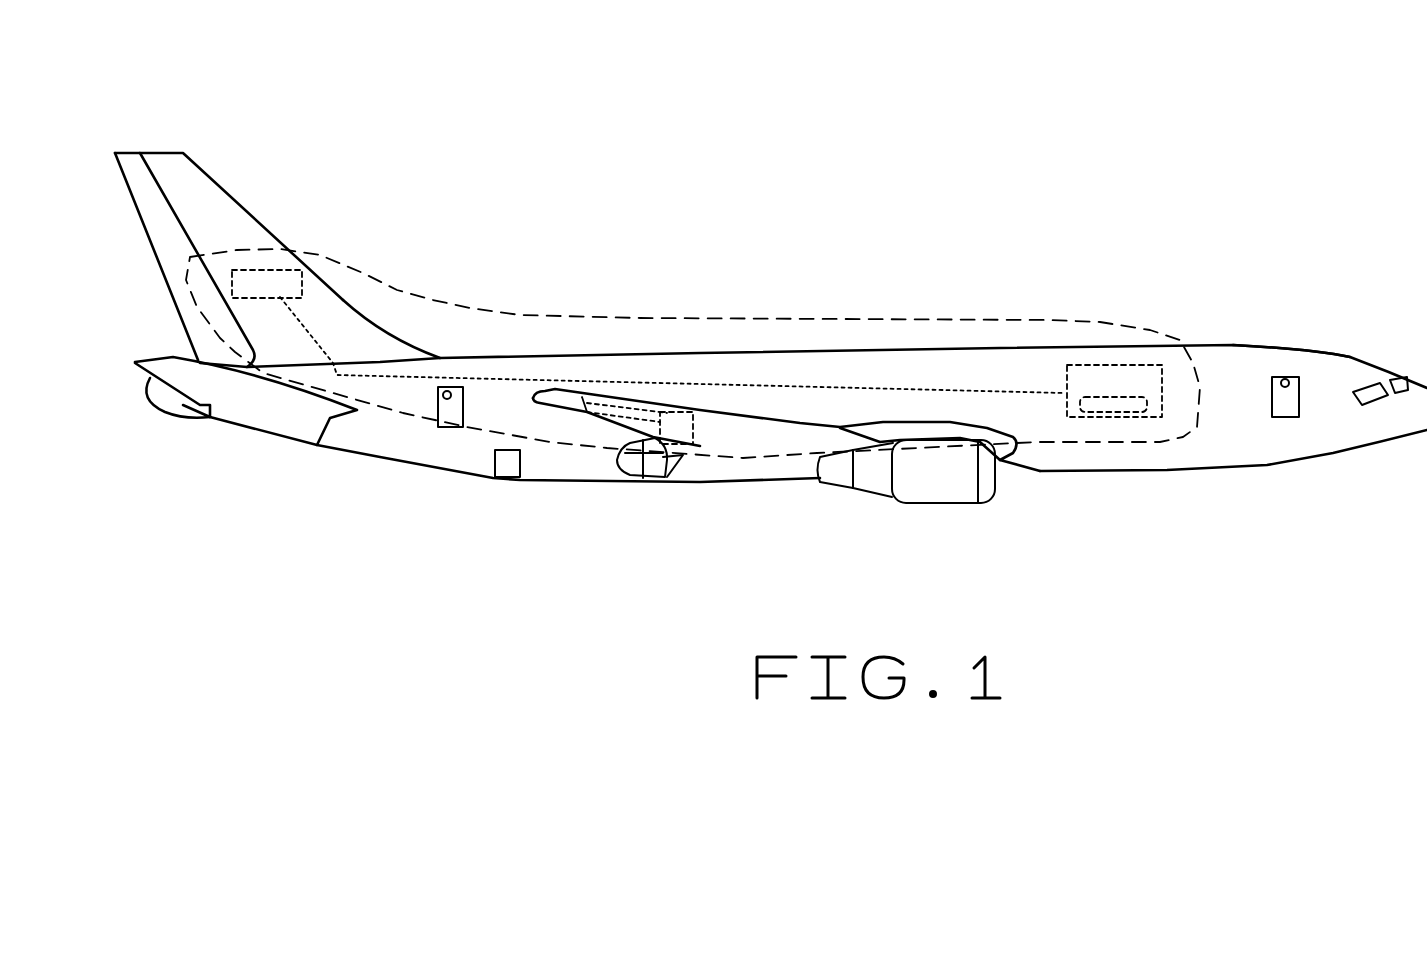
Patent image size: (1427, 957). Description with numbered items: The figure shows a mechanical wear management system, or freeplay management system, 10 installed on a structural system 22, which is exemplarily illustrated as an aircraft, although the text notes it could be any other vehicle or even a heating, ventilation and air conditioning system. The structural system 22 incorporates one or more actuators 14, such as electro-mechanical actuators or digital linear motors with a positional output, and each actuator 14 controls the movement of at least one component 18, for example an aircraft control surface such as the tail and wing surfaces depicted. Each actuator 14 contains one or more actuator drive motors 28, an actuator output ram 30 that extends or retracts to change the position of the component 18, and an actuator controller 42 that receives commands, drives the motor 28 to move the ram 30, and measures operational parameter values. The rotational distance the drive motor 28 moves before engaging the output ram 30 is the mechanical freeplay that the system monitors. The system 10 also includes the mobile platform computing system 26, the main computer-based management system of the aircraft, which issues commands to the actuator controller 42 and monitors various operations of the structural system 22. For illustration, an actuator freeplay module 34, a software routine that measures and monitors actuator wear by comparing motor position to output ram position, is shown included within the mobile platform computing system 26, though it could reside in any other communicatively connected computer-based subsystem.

The mechanical wear management system 10 is at (812, 310).
The actuator 14 is at (270, 275).
The component 18 is at (160, 243).
The structural system 22 is at (1268, 345).
The mobile platform computing system 26 is at (1112, 367).
The actuator drive motor 28 is at (253, 277).
The actuator output ram 30 is at (222, 290).
The actuator freeplay module 34 is at (1118, 412).
The actuator controller 42 is at (300, 293).